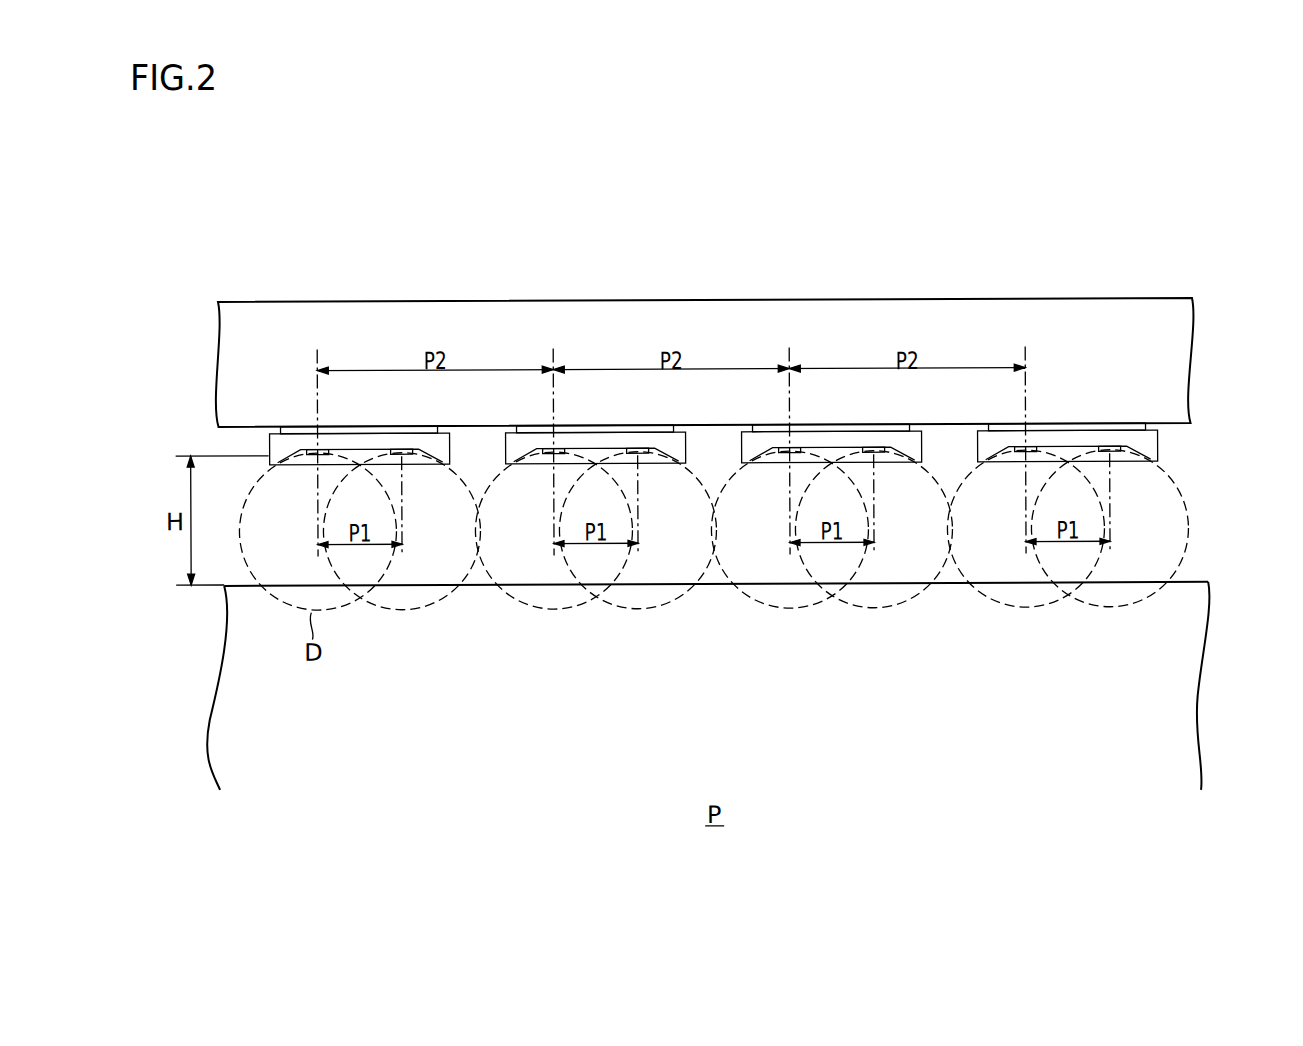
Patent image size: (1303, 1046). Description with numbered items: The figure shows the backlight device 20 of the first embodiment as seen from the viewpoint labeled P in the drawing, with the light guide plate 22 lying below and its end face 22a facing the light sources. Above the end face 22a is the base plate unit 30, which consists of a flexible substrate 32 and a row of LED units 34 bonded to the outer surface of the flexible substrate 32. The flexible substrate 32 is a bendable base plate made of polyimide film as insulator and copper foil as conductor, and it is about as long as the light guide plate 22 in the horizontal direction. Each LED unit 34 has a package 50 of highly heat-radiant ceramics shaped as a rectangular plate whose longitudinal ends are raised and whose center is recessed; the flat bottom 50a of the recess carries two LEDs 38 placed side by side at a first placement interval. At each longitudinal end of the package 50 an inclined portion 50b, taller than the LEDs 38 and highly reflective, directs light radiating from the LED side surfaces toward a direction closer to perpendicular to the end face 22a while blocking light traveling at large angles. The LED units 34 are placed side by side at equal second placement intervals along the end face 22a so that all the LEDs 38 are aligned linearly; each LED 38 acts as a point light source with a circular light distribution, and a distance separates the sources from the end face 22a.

The backlight device 20 is at (305, 259).
The light guide plate 22 is at (1216, 609).
The end face 22a is at (1193, 586).
The base plate unit 30 is at (1207, 361).
The flexible substrate 32 is at (1021, 302).
The LED unit 34 is at (449, 446).
The LED 38 is at (309, 456).
The package 50 is at (268, 444).
The bottom 50a is at (367, 456).
The inclined portion 50b is at (281, 463).